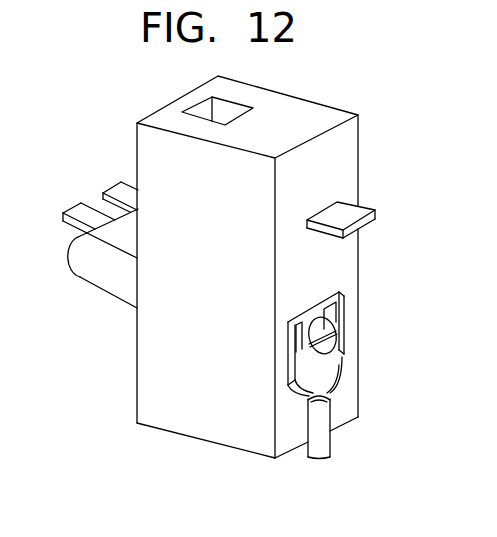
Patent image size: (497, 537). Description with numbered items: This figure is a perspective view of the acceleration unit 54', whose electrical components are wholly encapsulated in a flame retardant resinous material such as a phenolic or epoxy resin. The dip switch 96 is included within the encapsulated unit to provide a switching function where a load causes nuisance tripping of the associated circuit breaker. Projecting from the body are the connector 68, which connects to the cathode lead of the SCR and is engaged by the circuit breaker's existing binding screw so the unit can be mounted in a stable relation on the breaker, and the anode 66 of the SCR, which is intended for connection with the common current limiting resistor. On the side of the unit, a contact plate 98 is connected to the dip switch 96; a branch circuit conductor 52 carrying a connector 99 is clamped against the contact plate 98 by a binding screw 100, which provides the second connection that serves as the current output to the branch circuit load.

The acceleration unit 54' is at (302, 252).
The dip switch 96 is at (244, 116).
The connector 68 is at (65, 213).
The anode 66 is at (376, 208).
The contact plate 98 is at (309, 318).
The connector 99 is at (334, 318).
The binding screw 100 is at (340, 346).
The conductor 52 is at (323, 413).